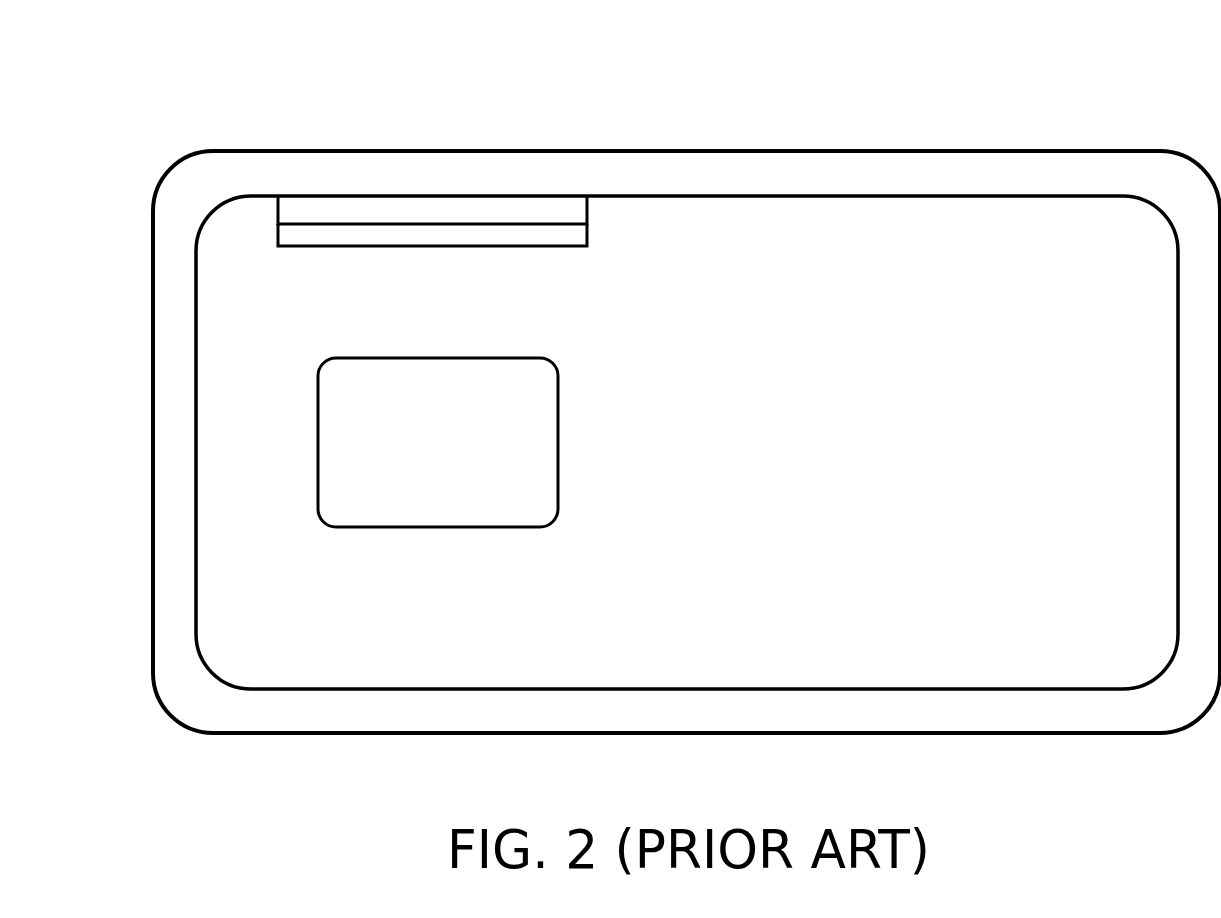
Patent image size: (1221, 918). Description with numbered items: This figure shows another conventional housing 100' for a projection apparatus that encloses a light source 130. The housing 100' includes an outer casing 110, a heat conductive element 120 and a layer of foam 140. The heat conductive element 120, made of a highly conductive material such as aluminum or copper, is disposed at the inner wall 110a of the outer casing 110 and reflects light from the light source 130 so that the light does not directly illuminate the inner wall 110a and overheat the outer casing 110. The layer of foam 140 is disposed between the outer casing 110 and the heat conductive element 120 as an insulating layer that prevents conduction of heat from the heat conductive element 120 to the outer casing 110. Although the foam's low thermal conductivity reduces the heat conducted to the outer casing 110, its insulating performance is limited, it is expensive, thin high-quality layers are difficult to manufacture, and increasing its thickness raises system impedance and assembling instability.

The housing 100' is at (681, 54).
The outer casing 110 is at (745, 173).
The inner wall 110a is at (843, 195).
The heat conductive element 120 is at (578, 235).
The light source 130 is at (453, 465).
The layer of foam 140 is at (573, 206).